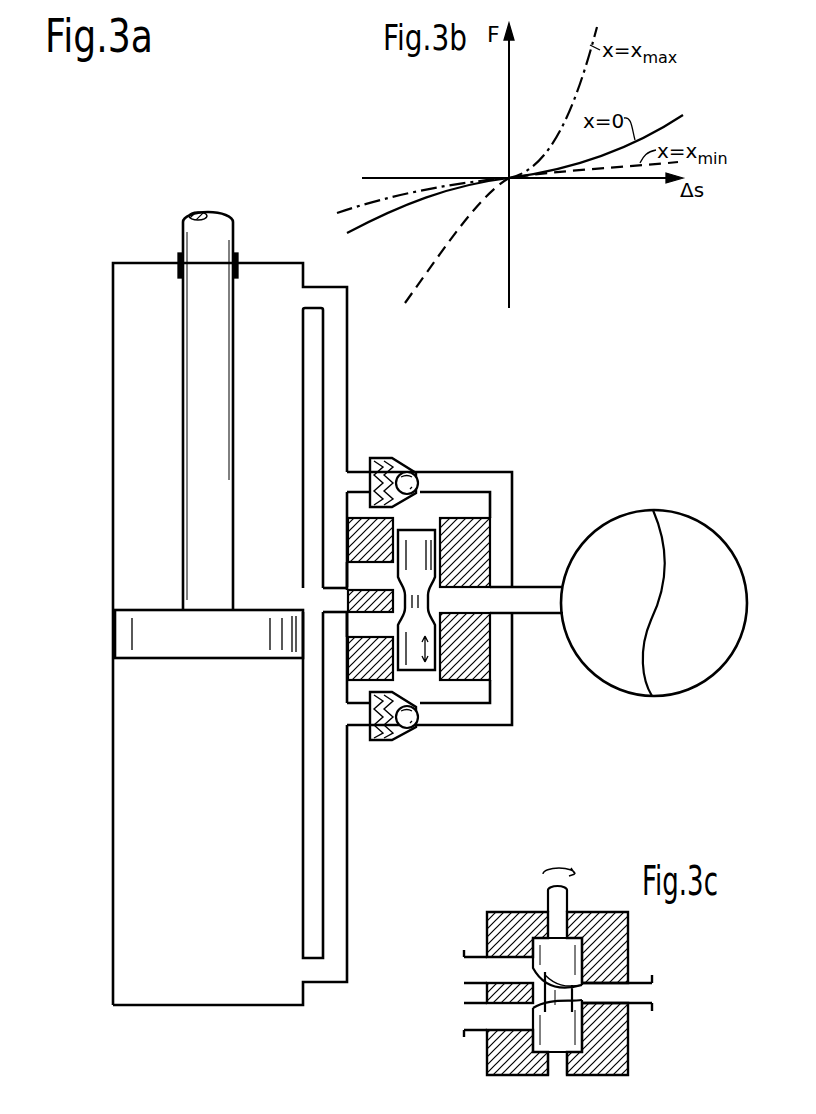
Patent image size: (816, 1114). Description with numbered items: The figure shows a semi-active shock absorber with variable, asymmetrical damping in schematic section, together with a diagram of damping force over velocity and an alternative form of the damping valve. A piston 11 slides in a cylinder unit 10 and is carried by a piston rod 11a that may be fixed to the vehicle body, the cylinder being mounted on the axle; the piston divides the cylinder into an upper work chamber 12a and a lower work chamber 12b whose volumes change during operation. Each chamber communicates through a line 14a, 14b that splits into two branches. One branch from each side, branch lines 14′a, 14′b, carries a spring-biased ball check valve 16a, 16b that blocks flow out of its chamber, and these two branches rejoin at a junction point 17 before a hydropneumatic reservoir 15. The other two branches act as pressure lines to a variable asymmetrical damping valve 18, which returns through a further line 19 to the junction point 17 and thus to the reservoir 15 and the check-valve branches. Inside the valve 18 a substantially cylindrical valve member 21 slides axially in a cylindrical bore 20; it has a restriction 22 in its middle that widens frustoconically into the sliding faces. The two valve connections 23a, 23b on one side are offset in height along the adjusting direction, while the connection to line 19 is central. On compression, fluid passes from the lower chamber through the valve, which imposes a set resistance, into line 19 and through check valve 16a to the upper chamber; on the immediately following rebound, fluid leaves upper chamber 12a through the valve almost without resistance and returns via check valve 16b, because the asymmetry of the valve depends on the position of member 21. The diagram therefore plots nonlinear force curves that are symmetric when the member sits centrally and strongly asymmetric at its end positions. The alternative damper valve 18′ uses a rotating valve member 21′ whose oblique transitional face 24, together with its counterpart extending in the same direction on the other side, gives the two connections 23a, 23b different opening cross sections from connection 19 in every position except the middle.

In FIG. 3A, the cylinder unit 10 is at (112, 890).
In FIG. 3A, the piston 11 is at (142, 625).
In FIG. 3A, the piston rod 11a is at (222, 242).
In FIG. 3A, the upper work chamber 12a is at (126, 443).
In FIG. 3A, the lower work chamber 12b is at (132, 807).
In FIG. 3A, the line 14a is at (340, 415).
In FIG. 3A, the line 14b is at (332, 892).
In FIG. 3A, the branch line 14′a is at (437, 480).
In FIG. 3A, the branch line 14′b is at (480, 715).
In FIG. 3A, the reservoir 15 is at (621, 545).
In FIG. 3A, the check valve 16a is at (378, 465).
In FIG. 3A, the check valve 16b is at (383, 733).
In FIG. 3A, the junction point 17 is at (546, 496).
In FIG. 3A, the variable asymmetrical damping valve 18 is at (477, 522).
In FIG. 3A, the line 19 is at (475, 603).
In FIG. 3A, the cylindrical bore 20 is at (440, 680).
In FIG. 3A, the valve member 21 is at (418, 545).
In FIG. 3A, the restriction 22 is at (452, 685).
In FIG. 3A, the valve connection 23a is at (357, 580).
In FIG. 3A, the valve connection 23b is at (348, 627).
In FIG. 3C, the damper valve 18′ is at (628, 1036).
In FIG. 3C, the valve member 21′ is at (563, 955).
In FIG. 3C, the helical control groove 24 is at (583, 980).